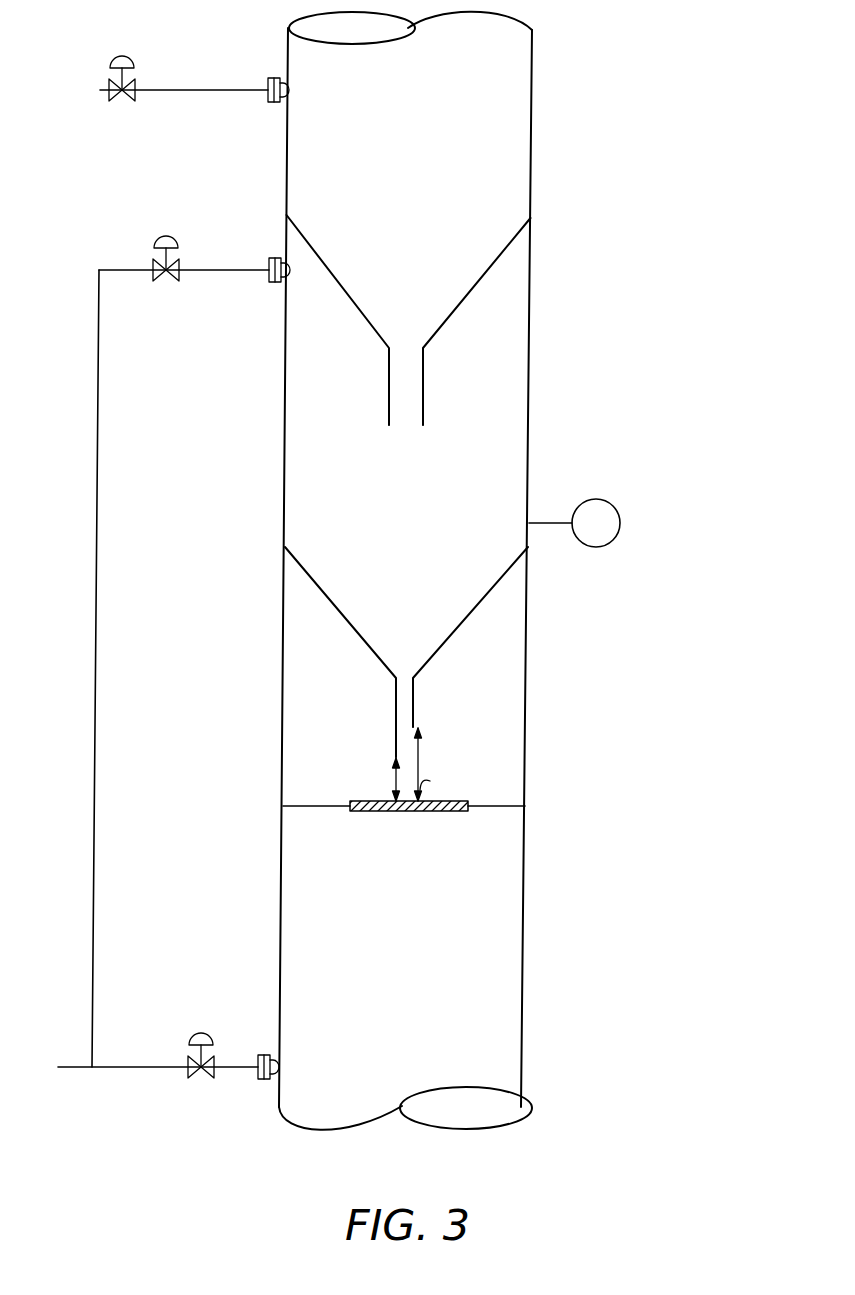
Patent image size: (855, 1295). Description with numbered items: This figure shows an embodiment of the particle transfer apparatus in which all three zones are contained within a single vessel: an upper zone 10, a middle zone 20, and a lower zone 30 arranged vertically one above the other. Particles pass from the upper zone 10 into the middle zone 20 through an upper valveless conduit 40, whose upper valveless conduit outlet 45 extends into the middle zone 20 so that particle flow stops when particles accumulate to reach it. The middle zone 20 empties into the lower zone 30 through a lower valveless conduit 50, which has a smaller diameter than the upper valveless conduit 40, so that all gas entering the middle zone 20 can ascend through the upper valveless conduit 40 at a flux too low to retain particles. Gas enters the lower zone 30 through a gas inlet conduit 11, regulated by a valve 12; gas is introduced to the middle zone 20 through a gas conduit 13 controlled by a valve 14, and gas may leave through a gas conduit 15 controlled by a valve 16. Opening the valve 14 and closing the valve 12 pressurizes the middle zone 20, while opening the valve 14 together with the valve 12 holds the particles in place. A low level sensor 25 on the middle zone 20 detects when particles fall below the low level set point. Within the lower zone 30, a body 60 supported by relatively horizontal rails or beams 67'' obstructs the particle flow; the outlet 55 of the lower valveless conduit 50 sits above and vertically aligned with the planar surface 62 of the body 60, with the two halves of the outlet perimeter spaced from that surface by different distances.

The upper zone 10 is at (465, 115).
The gas inlet conduit 11 is at (155, 1065).
The valve 12 is at (203, 1033).
The gas conduit 13 is at (252, 268).
The valve 14 is at (166, 238).
The gas conduit 15 is at (237, 88).
The valve 16 is at (120, 56).
The middle zone 20 is at (508, 412).
The low level sensor 25 is at (613, 505).
The lower zone 30 is at (493, 705).
The upper valveless conduit 40 is at (408, 383).
The upper valveless conduit outlet 45 is at (405, 430).
The lower valveless conduit 50 is at (405, 700).
The outlet 55 is at (378, 746).
The body 60 is at (432, 812).
The planar surface 62 is at (360, 801).
The horizontal rails or beams 67'' is at (404, 834).